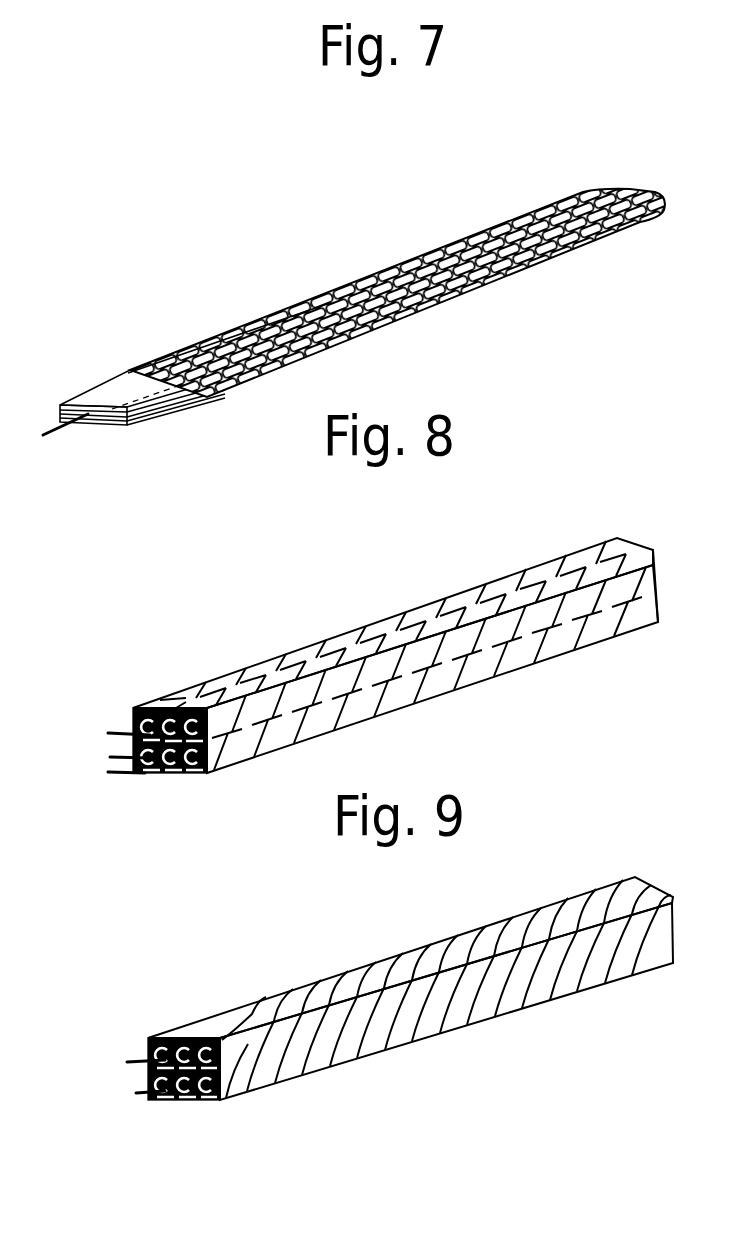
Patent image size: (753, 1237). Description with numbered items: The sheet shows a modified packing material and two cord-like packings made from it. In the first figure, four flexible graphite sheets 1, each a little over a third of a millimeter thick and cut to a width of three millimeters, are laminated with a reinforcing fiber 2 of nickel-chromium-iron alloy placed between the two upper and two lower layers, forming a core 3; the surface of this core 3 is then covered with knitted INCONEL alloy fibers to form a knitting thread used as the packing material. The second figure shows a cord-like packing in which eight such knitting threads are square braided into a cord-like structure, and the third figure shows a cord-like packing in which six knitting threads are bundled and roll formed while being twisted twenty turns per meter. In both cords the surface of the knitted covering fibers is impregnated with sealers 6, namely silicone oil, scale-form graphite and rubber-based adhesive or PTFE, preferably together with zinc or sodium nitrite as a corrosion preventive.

In FIG. 7, the flexible graphite sheet 1 is at (137, 426).
In FIG. 7, the reinforcing fiber 2 is at (42, 441).
In FIG. 8, the reinforcing fiber 2 is at (121, 774).
In FIG. 9, the reinforcing fiber 2 is at (135, 1101).
In FIG. 7, the core 3 is at (84, 391).
In FIG. 8, the sealers 6 is at (212, 760).
In FIG. 9, the sealers 6 is at (223, 1101).